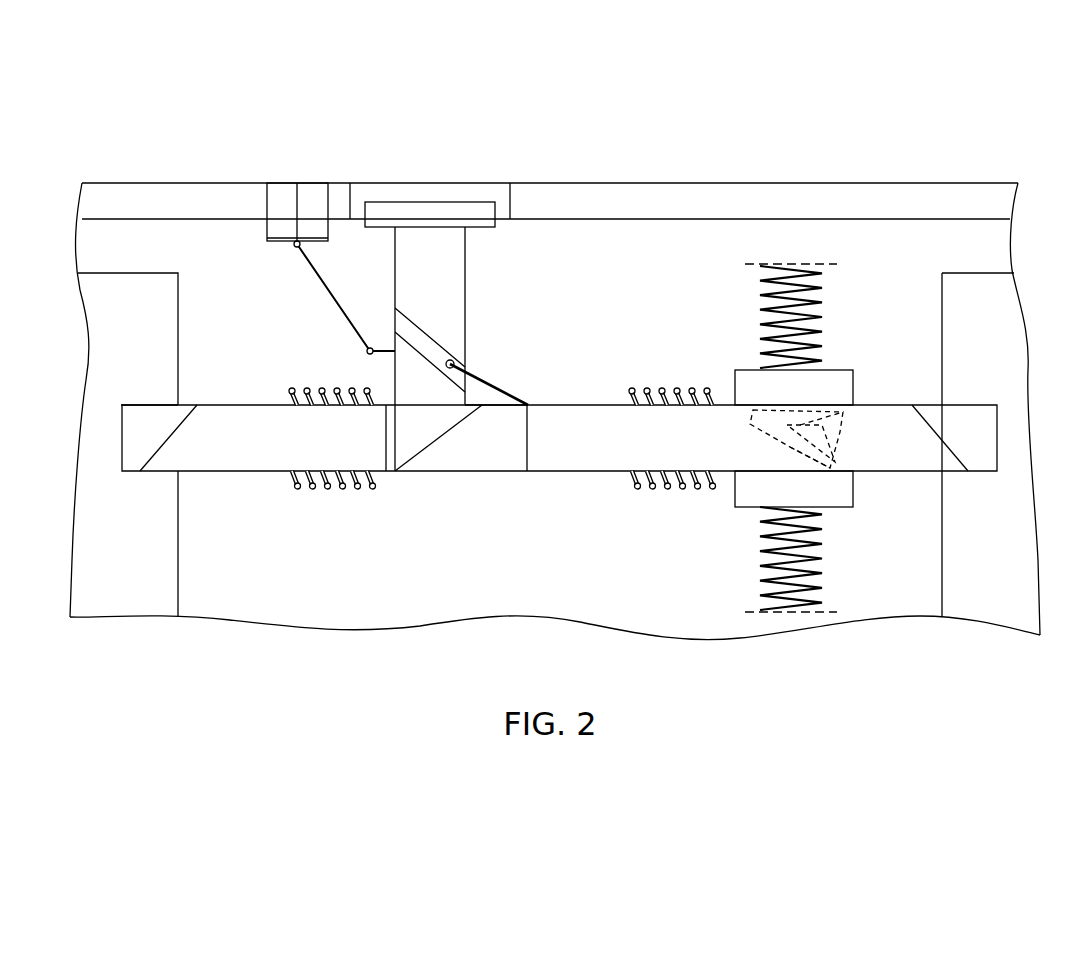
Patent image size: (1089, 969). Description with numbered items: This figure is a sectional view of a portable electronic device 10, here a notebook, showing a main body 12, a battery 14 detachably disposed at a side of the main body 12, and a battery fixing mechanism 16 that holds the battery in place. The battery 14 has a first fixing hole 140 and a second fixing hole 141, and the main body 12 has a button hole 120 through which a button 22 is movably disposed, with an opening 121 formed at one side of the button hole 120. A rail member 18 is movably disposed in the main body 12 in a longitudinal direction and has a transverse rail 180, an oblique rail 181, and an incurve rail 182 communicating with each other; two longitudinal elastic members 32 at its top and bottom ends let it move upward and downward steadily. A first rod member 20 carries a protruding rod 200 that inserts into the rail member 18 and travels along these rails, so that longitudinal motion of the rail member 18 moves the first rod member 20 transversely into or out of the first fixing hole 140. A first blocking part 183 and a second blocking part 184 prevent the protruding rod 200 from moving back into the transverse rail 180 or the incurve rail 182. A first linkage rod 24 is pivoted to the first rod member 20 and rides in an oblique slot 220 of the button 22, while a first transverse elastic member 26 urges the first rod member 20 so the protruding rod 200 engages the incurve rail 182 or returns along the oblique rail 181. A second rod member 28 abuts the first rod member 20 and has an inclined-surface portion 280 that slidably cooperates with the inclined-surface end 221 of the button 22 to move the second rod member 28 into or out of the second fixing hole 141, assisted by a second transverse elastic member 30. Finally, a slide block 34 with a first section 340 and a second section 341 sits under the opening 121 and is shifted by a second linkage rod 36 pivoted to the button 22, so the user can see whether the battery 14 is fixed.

The portable electronic device 10 is at (948, 92).
The main body 12 is at (972, 198).
The battery 14 is at (1010, 606).
The battery fixing mechanism 16 is at (877, 76).
The rail member 18 is at (848, 370).
The first rod member 20 is at (597, 405).
The button 22 is at (408, 212).
The first linkage rod 24 is at (487, 404).
The first transverse elastic member 26 is at (712, 392).
The second rod member 28 is at (210, 405).
The second transverse elastic member 30 is at (356, 330).
The longitudinal elastic member 32 is at (790, 264).
The slide block 34 is at (337, 112).
The second linkage rod 36 is at (356, 388).
The button hole 120 is at (458, 182).
The opening 121 is at (279, 176).
The first fixing hole 140 is at (975, 480).
The second fixing hole 141 is at (133, 471).
The transverse rail 180 is at (768, 410).
The oblique rail 181 is at (765, 507).
The incurve rail 182 is at (840, 445).
The first blocking part 183 is at (823, 407).
The second blocking part 184 is at (845, 475).
The protruding rod 200 is at (808, 462).
The oblique slot 220 is at (427, 332).
The inclined-surface end 221 is at (410, 443).
The inclined-surface portion 280 is at (470, 417).
The first section 340 is at (286, 237).
The second section 341 is at (318, 237).